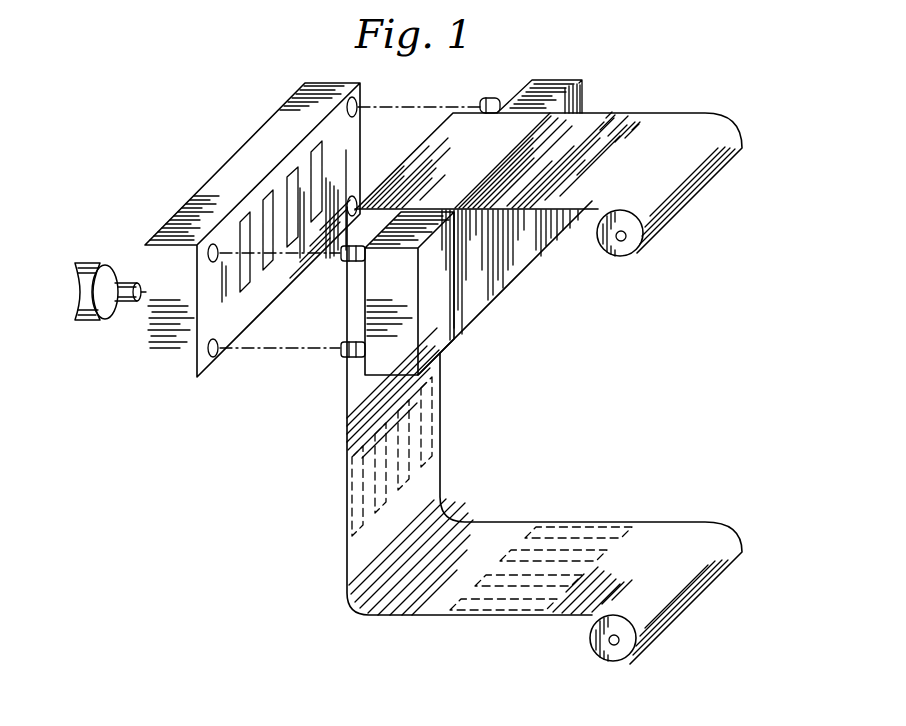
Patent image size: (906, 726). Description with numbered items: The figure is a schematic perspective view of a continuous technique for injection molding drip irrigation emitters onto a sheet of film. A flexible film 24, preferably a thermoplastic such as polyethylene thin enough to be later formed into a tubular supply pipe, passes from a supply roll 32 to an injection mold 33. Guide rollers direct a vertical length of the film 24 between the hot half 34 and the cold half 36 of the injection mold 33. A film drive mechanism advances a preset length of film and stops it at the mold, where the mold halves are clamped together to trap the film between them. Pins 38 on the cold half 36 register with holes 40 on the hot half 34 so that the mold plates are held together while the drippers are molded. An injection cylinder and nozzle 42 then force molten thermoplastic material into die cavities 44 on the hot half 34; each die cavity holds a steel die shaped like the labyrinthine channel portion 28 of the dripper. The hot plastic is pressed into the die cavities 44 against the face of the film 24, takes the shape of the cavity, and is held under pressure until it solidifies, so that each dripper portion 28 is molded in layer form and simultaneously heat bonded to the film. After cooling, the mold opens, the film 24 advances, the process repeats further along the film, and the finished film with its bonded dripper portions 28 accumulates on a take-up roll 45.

The flexible film 24 is at (360, 378).
The labyrinthine channel portion 28 is at (440, 388).
The supply roll 32 is at (623, 257).
The injection mold 33 is at (233, 142).
The hot half 34 is at (173, 370).
The cold half 36 is at (494, 295).
The pins 38 is at (347, 343).
The holes 40 is at (214, 362).
The injection cylinder and nozzle 42 is at (117, 258).
The die cavities 44 is at (318, 183).
The take-up roll 45 is at (604, 655).